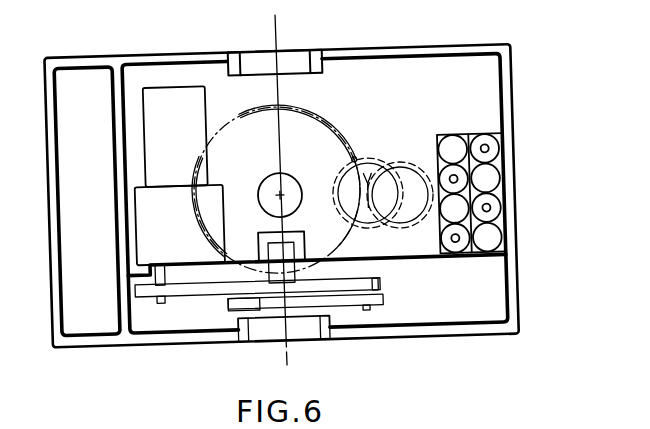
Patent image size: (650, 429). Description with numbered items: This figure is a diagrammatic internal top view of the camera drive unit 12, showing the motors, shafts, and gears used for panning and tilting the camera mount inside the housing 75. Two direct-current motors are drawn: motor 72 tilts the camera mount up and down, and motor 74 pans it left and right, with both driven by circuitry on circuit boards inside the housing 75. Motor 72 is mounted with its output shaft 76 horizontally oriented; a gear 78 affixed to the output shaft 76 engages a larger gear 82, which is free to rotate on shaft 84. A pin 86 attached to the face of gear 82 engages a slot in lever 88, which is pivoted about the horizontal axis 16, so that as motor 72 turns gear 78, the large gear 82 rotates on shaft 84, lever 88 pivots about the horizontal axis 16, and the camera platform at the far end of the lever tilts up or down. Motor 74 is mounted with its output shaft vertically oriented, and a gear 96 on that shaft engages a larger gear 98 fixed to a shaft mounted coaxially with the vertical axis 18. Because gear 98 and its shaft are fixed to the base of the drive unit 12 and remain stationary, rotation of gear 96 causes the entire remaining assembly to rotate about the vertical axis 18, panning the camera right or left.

The drive unit 12 is at (514, 127).
The horizontal axis 16 is at (281, 18).
The vertical axis 18 is at (283, 192).
The motor 72 is at (171, 85).
The motor 74 is at (376, 150).
The housing 75 is at (384, 51).
The output shaft 76 is at (168, 274).
The gear 78 is at (177, 287).
The gear 82 is at (385, 286).
The shaft 84 is at (281, 262).
The pin 86 is at (365, 312).
The lever 88 is at (305, 301).
The gear 96 is at (397, 158).
The gear 98 is at (337, 127).